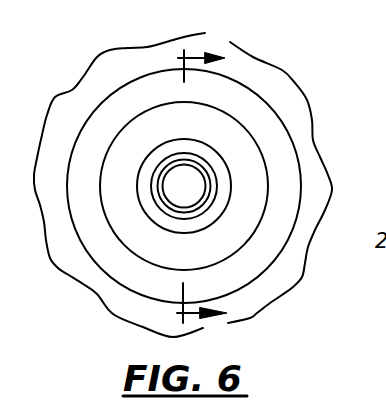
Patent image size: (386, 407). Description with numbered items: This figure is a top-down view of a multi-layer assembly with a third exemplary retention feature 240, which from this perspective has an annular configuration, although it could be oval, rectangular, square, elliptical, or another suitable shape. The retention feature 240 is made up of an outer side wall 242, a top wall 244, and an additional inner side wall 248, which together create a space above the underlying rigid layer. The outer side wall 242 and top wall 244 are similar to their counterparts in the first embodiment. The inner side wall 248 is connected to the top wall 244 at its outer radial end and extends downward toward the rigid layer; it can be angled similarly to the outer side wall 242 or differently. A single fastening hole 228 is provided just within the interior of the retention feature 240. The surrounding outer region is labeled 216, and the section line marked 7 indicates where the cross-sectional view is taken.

The housing 216 is at (285, 265).
The retention feature 240 is at (274, 86).
The outer side wall 242 is at (282, 185).
The top wall 244 is at (225, 232).
The fastening hole 228 is at (182, 162).
The inner side wall 248 is at (163, 207).
The section line 7- 7 is at (203, 186).